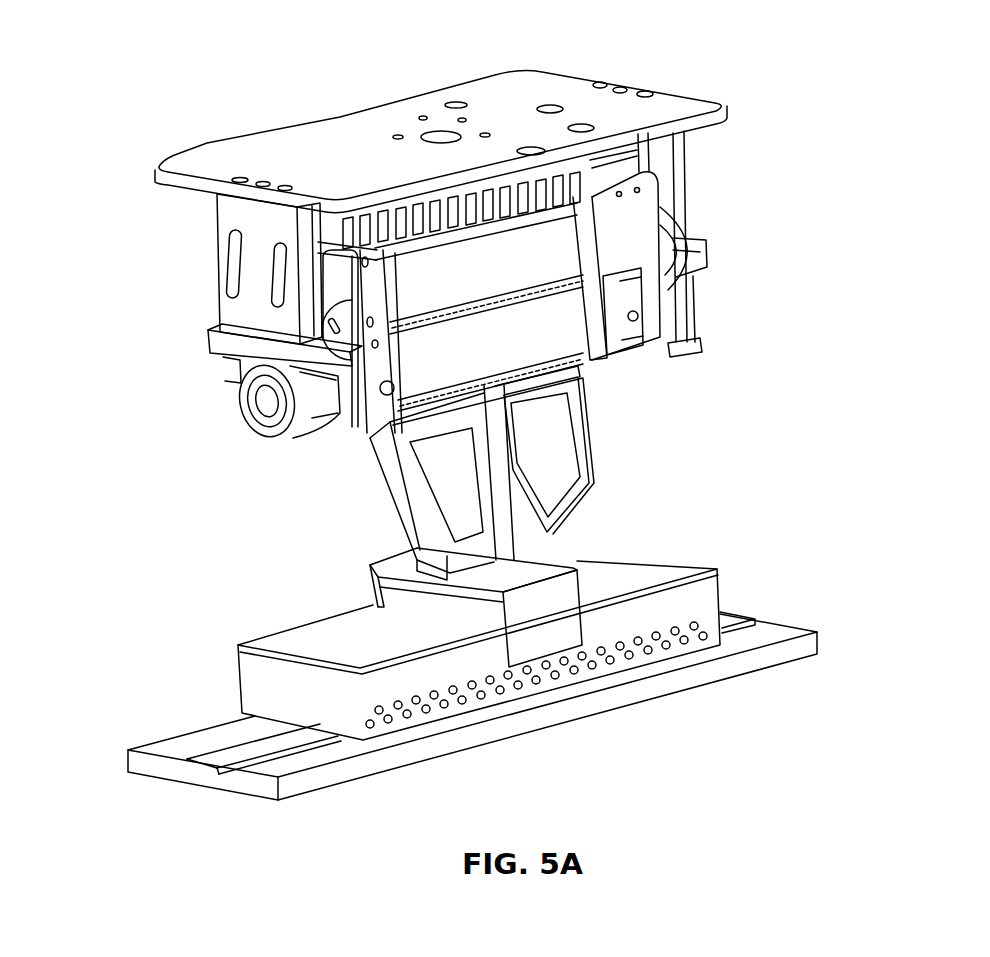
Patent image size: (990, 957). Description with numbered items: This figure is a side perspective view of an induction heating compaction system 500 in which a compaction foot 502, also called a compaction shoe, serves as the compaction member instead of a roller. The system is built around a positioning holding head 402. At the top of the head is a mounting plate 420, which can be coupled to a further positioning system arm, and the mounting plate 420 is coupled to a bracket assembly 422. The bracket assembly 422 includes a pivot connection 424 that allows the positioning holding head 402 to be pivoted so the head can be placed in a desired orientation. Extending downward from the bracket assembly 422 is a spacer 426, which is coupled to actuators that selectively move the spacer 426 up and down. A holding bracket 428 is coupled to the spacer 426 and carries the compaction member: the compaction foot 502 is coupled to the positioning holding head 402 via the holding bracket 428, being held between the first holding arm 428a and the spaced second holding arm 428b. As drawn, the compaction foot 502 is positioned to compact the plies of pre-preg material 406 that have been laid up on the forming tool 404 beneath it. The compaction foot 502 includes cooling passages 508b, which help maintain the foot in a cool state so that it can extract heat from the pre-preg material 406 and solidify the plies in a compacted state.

The induction heating compaction system 500 is at (862, 106).
The mounting plate 420 is at (583, 82).
The bracket assembly 422 is at (237, 310).
The pivot connection 424 is at (262, 401).
The positioning holding head 402 is at (683, 207).
The spacer 426 is at (393, 473).
The holding bracket 428 is at (537, 567).
The first holding arm 428a is at (570, 598).
The second holding arm 428b is at (371, 579).
The compaction foot 502 is at (684, 560).
The cooling passages 508b is at (714, 632).
The plies of pre-preg material 406 is at (740, 610).
The forming tool 404 is at (793, 650).